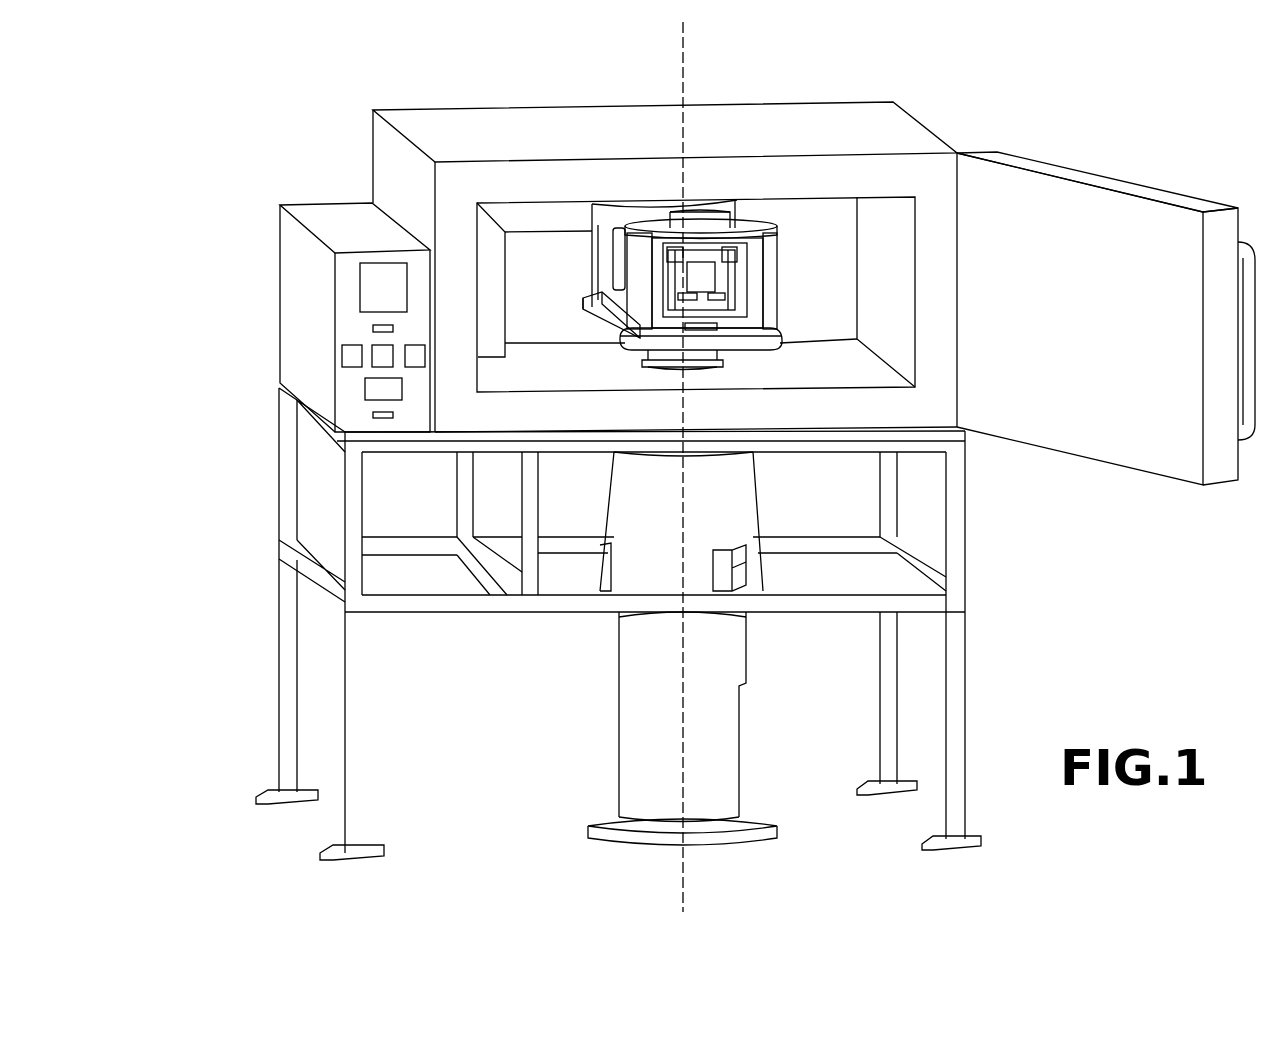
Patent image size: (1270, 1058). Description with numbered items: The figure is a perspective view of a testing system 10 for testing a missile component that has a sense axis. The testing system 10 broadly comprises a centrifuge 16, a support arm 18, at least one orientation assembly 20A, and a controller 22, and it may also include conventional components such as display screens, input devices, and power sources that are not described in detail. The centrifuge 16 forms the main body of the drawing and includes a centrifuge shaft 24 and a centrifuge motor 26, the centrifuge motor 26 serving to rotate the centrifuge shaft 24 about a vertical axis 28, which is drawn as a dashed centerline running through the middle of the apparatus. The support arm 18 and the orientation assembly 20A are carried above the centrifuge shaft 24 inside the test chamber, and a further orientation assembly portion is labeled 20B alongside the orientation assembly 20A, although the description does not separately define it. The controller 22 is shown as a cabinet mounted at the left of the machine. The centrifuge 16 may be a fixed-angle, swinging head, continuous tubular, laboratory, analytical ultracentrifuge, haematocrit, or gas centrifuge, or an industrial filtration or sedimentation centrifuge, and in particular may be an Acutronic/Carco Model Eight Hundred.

The testing system 10 is at (193, 129).
The centrifuge 16 is at (583, 647).
The support arm 18 is at (610, 317).
The orientation assembly 20A is at (783, 273).
The second fixture portion 20B is at (586, 223).
The controller 22 is at (351, 337).
The centrifuge shaft 24 is at (700, 363).
The centrifuge motor 26 is at (720, 532).
The vertical axis 28 is at (683, 62).